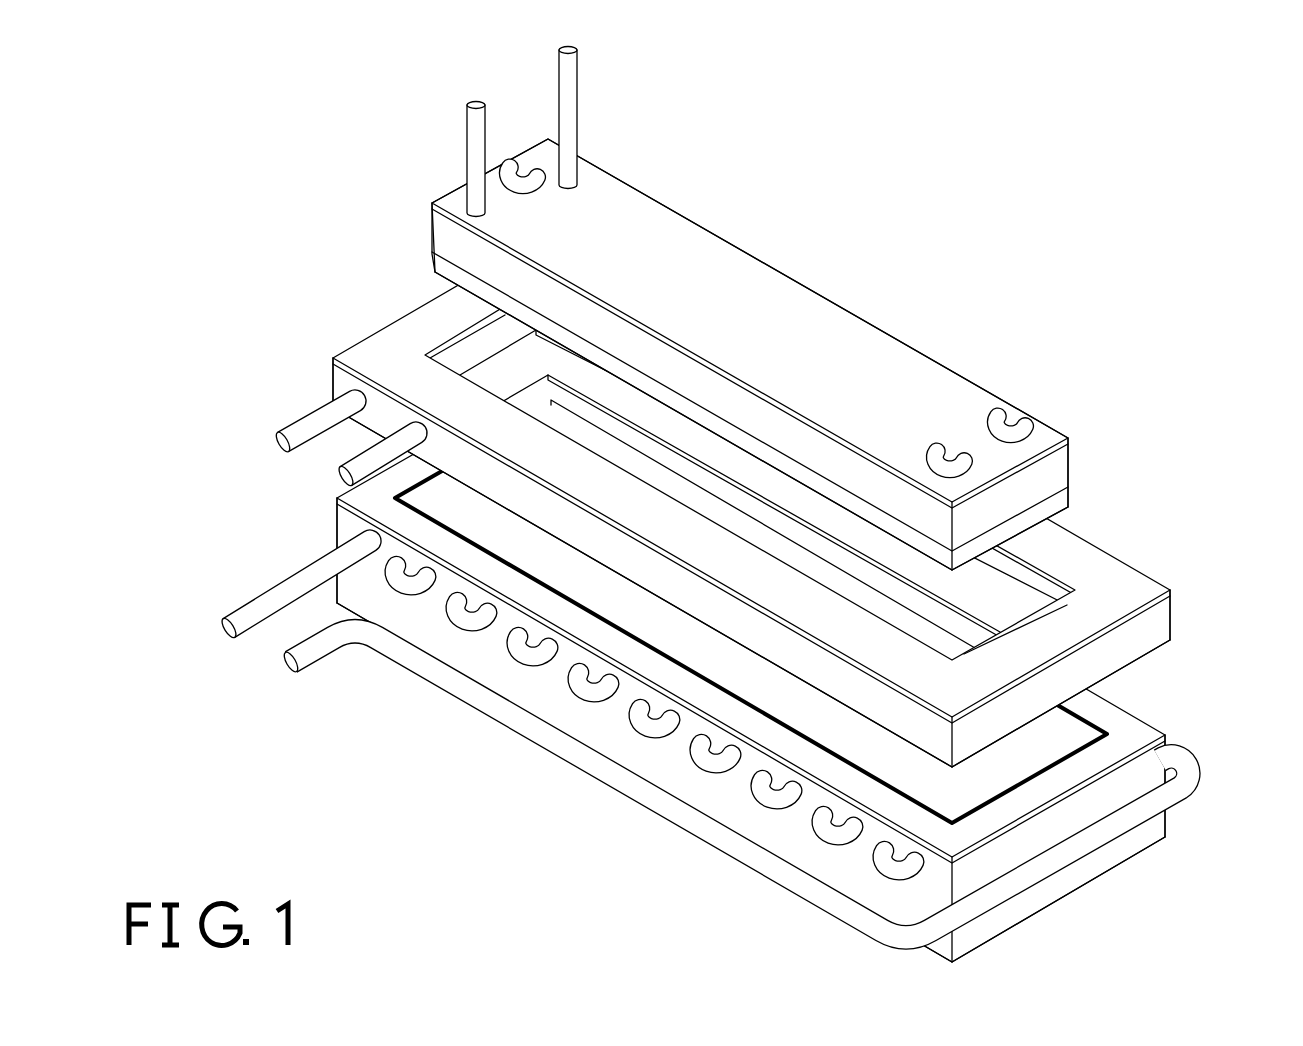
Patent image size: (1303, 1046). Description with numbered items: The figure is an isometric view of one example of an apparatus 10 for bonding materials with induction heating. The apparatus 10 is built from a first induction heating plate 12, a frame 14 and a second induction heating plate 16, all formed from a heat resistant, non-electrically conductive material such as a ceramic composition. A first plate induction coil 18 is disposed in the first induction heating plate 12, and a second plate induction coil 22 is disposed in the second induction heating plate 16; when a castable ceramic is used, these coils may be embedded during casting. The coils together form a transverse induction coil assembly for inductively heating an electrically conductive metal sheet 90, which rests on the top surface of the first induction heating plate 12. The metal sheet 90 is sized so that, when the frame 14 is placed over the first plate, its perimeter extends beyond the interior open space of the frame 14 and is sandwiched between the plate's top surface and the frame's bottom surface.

The apparatus 10 is at (741, 505).
The first induction heating plate 12 is at (811, 669).
The frame 14 is at (1115, 585).
The second induction heating plate 16 is at (783, 309).
The first plate induction coil 18 is at (582, 682).
The second plate induction coil 22 is at (1007, 415).
The metal sheet 90 is at (1065, 725).